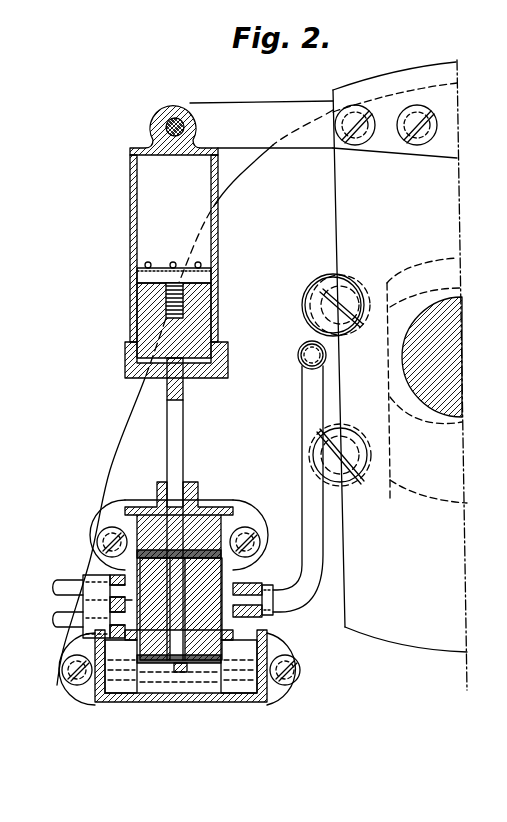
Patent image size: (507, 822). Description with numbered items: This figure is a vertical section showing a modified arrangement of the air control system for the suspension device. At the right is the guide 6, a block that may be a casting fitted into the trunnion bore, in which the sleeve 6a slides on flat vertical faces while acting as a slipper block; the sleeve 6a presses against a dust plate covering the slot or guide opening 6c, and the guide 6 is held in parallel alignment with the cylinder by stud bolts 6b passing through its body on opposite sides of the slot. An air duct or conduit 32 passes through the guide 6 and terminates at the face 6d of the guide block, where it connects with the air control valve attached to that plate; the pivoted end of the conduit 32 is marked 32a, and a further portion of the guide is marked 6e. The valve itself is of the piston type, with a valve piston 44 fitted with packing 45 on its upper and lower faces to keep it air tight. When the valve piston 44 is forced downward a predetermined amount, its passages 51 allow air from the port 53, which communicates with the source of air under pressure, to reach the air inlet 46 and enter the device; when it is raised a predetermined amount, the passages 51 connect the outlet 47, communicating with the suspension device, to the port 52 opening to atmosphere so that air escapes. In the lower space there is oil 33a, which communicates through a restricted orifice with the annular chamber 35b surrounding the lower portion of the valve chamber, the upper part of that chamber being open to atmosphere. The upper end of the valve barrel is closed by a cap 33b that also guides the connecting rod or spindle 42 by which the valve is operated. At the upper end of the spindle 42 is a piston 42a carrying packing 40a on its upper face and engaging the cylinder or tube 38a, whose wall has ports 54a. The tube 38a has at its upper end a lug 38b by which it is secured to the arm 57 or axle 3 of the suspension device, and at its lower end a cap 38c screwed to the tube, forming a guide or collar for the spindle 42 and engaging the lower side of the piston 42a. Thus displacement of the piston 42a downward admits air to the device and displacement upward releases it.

The axle 3 is at (465, 332).
The guide 6 is at (390, 462).
The sleeve 6a is at (423, 405).
The stud bolts 6b is at (352, 283).
The slot or guide opening 6c is at (400, 375).
The face of the guide block 6d is at (371, 371).
The door recess 6e is at (420, 475).
The air duct or conduit 32 is at (323, 562).
The conduit pivot 32a is at (300, 349).
The oil 33a is at (215, 688).
The cap 33b is at (205, 505).
The annular chamber 35b is at (121, 688).
The cylinder or tube 38a is at (137, 195).
The lug 38b is at (151, 122).
The cap 38c is at (228, 372).
The packing 40a is at (137, 283).
The connecting rod or spindle 42 is at (183, 440).
The piston 42a is at (211, 314).
The valve piston 44 is at (200, 558).
The packing 45 is at (157, 558).
The air inlet 46 is at (262, 617).
The outlet 47 is at (243, 582).
The passages 51 is at (125, 603).
The port 52 is at (89, 606).
The port 53 is at (89, 617).
The ports 54a is at (212, 268).
The arm 57 is at (261, 124).